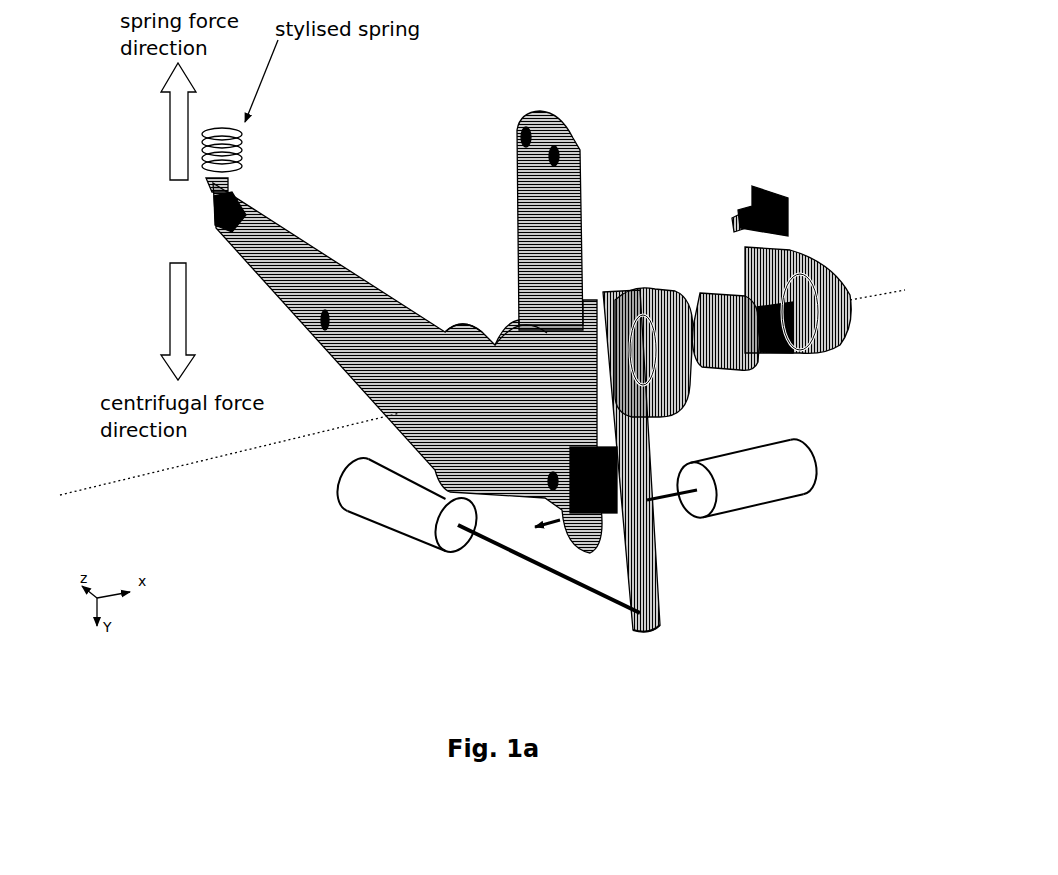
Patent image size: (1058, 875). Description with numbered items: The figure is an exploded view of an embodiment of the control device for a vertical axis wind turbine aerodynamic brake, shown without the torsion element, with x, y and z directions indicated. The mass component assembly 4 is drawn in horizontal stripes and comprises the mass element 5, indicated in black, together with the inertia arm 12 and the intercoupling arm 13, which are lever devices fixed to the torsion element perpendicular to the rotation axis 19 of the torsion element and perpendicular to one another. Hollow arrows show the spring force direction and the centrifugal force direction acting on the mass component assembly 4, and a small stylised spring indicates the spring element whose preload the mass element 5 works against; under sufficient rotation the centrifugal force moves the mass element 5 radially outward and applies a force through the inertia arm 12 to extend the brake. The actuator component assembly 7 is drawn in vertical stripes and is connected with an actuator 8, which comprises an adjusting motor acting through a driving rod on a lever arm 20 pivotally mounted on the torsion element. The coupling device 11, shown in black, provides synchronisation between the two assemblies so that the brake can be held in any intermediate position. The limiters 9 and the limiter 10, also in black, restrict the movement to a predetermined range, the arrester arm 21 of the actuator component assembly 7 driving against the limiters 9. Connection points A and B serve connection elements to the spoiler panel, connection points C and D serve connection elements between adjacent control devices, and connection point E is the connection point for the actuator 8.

The mass component assembly 4 is at (500, 352).
The mass element 5 is at (222, 226).
The actuator component assembly 7 is at (632, 413).
The actuator 8 is at (395, 517).
The limiters 9 is at (778, 312).
The limiter 10 is at (645, 522).
The coupling device 11 is at (733, 496).
The inertia arm 12 is at (354, 328).
The intercoupling arm 13 is at (527, 240).
The rotation axis of the torsion element 19 is at (917, 292).
The lever arm 20 is at (635, 578).
The arrester arm 21 is at (787, 247).
The connection point for a connection element A is at (323, 333).
The connection point for a connection element B is at (465, 496).
The connection point for a connection element C is at (520, 128).
The connection point for a connection element D is at (545, 153).
The connection point for an actuator E is at (655, 612).